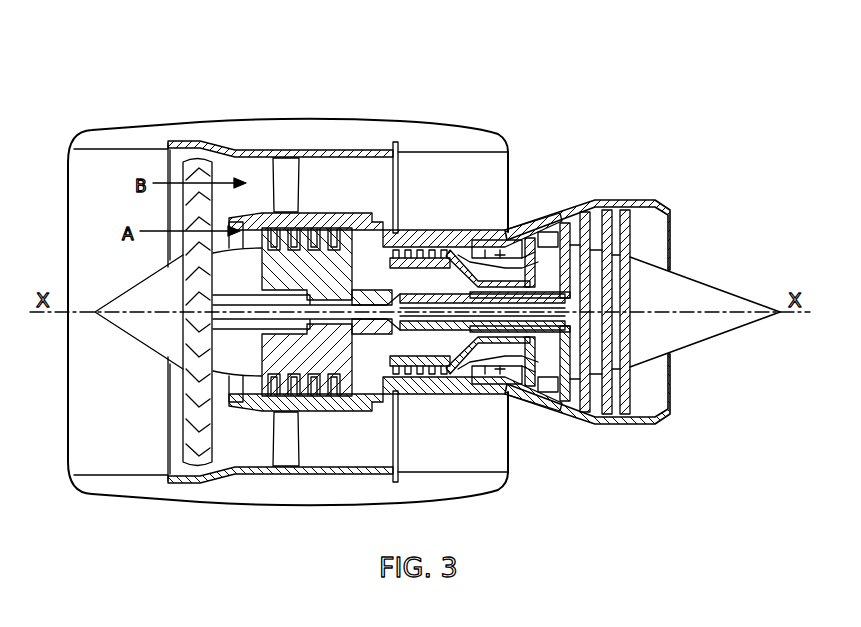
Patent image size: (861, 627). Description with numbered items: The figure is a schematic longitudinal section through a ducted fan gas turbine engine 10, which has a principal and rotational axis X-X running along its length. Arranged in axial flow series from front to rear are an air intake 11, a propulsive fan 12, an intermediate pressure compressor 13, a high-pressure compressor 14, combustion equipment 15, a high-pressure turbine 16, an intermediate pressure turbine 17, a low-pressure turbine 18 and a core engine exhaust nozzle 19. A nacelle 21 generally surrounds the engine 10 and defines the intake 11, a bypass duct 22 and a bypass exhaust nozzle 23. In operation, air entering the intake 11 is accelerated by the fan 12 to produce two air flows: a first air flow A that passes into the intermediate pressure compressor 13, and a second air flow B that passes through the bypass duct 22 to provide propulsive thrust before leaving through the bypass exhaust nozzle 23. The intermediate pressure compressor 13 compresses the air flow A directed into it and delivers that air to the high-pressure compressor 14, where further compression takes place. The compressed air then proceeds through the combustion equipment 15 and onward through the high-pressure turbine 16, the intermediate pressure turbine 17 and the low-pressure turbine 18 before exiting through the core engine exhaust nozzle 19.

The ducted fan gas turbine engine 10 is at (112, 90).
The air intake 11 is at (116, 149).
The propulsive fan 12 is at (190, 432).
The intermediate pressure compressor 13 is at (322, 398).
The high-pressure compressor 14 is at (432, 236).
The combustion equipment 15 is at (462, 397).
The high-pressure turbine 16 is at (525, 393).
The intermediate pressure turbine 17 is at (563, 228).
The low-pressure turbine 18 is at (572, 417).
The core engine exhaust nozzle 19 is at (660, 203).
The nacelle 21 is at (320, 118).
The bypass duct 22 is at (317, 312).
The bypass exhaust nozzle 23 is at (508, 148).